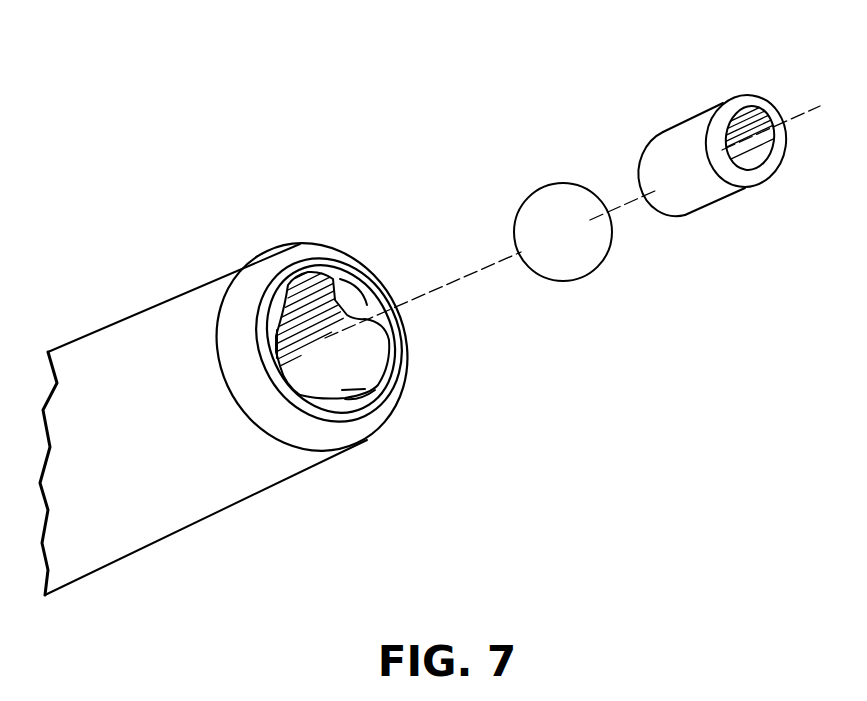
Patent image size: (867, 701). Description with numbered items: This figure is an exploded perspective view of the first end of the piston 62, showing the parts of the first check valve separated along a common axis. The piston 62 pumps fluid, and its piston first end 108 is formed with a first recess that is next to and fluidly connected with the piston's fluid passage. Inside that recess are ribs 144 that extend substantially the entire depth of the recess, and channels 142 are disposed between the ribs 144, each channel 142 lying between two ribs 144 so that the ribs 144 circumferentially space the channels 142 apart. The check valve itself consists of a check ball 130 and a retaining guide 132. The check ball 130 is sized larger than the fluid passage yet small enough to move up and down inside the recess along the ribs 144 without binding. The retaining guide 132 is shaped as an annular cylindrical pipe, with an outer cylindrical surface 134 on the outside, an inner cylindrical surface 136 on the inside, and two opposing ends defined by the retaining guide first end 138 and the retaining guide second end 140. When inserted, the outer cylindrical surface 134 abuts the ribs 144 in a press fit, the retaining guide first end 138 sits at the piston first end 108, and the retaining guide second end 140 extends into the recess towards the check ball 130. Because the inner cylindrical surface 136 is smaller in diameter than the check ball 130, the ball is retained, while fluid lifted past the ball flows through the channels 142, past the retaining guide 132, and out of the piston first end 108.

The piston 62 is at (163, 490).
The piston first end 108 is at (362, 443).
The check ball 130 is at (567, 262).
The retaining guide 132 is at (675, 147).
The outer cylindrical surface 134 is at (723, 202).
The inner cylindrical surface 136 is at (760, 154).
The retaining guide first end 138 is at (752, 103).
The retaining guide second end 140 is at (658, 212).
The channels 142 is at (300, 272).
The ribs 144 is at (278, 348).